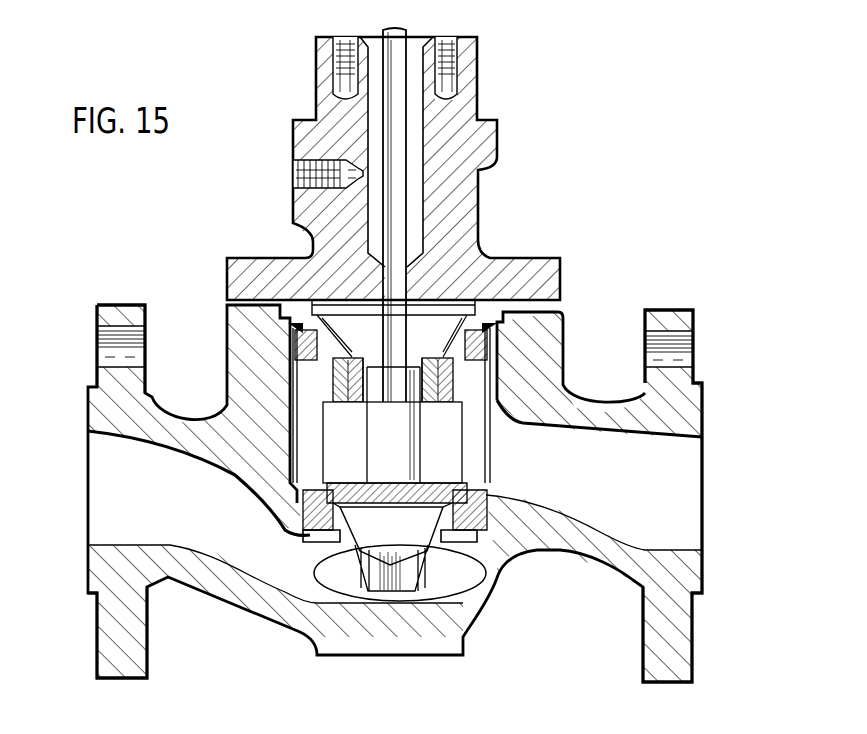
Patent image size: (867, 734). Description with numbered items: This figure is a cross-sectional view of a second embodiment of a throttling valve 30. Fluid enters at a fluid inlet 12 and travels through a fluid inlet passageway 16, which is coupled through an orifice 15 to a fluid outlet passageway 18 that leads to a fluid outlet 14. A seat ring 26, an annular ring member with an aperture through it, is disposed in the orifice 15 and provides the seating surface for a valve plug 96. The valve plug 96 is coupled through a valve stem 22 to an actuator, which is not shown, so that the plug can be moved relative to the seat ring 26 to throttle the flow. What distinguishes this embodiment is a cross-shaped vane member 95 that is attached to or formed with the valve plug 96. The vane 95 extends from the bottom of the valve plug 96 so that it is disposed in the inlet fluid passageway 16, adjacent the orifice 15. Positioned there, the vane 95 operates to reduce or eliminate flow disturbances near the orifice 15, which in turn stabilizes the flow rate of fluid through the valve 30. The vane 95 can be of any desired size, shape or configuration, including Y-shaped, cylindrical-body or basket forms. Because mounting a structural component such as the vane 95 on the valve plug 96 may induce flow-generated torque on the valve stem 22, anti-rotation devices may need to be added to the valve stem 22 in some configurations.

The fluid inlet 12 is at (88, 458).
The fluid outlet 14 is at (707, 460).
The orifice 15 is at (310, 545).
The fluid inlet passageway 16 is at (118, 522).
The fluid outlet passageway 18 is at (675, 508).
The valve stem 22 is at (427, 277).
The seat ring 26 is at (513, 573).
The throttling valve 30 is at (541, 110).
The cross-shaped vane member 95 is at (318, 603).
The valve plug 96 is at (455, 548).